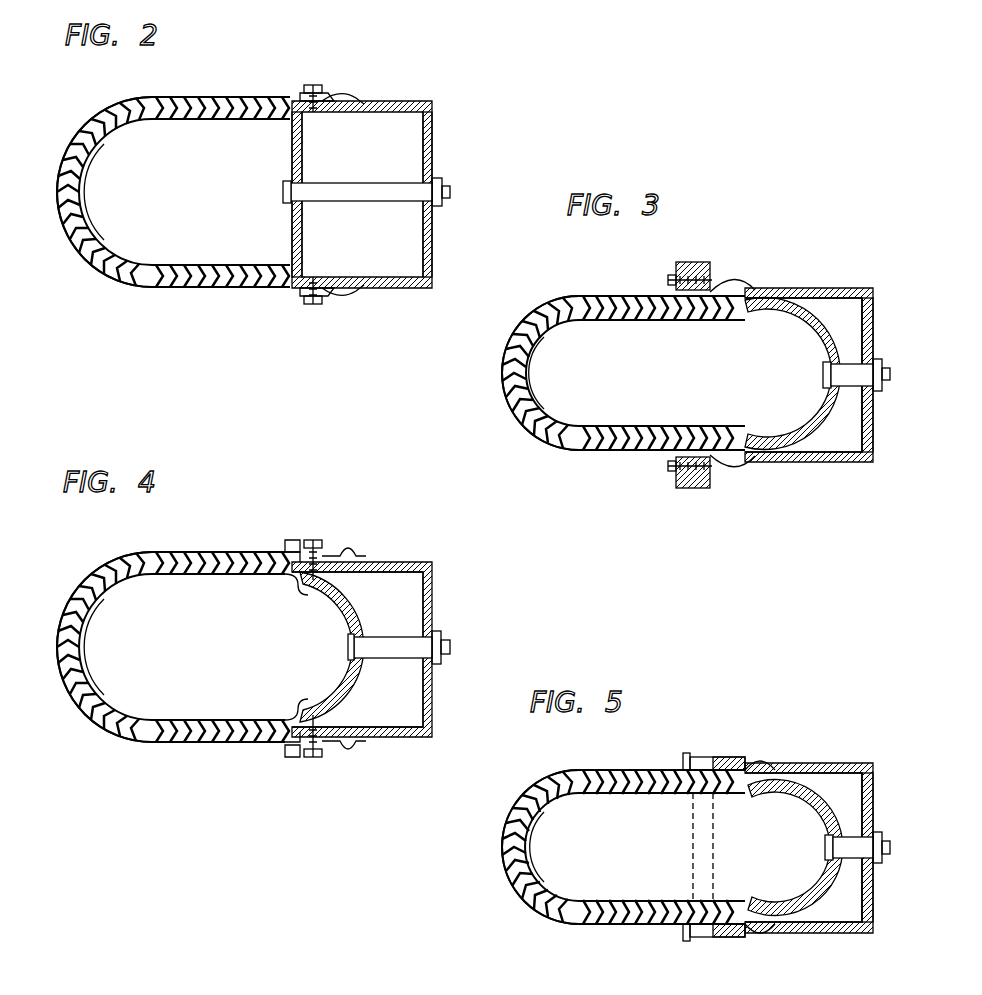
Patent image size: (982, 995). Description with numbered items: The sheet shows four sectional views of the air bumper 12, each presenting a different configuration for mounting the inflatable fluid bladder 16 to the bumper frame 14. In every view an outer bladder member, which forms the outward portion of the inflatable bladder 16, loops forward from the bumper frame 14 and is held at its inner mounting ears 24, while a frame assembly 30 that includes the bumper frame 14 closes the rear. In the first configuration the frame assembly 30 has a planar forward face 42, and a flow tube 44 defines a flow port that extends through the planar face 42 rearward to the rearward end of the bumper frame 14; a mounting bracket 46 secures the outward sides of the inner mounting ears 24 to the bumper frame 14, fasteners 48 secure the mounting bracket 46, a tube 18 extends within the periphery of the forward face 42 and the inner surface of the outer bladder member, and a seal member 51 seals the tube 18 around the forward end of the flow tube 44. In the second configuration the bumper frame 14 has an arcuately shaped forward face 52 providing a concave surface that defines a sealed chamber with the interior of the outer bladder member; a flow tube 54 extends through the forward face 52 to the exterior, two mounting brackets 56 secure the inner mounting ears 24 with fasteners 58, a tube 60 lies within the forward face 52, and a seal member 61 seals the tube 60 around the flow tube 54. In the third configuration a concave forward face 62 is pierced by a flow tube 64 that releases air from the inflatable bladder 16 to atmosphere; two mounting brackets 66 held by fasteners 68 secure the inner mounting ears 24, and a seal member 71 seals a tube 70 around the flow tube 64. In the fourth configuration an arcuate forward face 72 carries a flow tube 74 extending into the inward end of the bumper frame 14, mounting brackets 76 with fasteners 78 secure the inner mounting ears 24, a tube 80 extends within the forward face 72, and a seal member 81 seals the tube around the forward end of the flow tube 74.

In FIG. 2, the air bumper 12 is at (118, 92).
In FIG. 3, the air bumper 12 is at (500, 400).
In FIG. 4, the air bumper 12 is at (118, 548).
In FIG. 5, the air bumper 12 is at (500, 880).
In FIG. 2, the bumper frame 14 is at (438, 158).
In FIG. 3, the bumper frame 14 is at (877, 292).
In FIG. 4, the bumper frame 14 is at (440, 598).
In FIG. 5, the bumper frame 14 is at (878, 768).
In FIG. 2, the inflatable fluid bladder 16 is at (103, 265).
In FIG. 3, the inflatable fluid bladder 16 is at (532, 437).
In FIG. 4, the inflatable fluid bladder 16 is at (96, 710).
In FIG. 5, the inflatable fluid bladder 16 is at (532, 908).
In FIG. 2, the tube 18 is at (105, 242).
In FIG. 2, the inner mounting ear 24 is at (345, 98).
In FIG. 3, the inner mounting ear 24 is at (742, 300).
In FIG. 5, the inner mounting ear 24 is at (743, 770).
In FIG. 2, the frame assembly 30 is at (428, 230).
In FIG. 3, the frame assembly 30 is at (870, 452).
In FIG. 4, the frame assembly 30 is at (400, 565).
In FIG. 5, the frame assembly 30 is at (838, 895).
In FIG. 2, the planar forward face 42 is at (290, 133).
In FIG. 2, the flow tube 44 is at (345, 185).
In FIG. 2, the mounting bracket 46 is at (330, 92).
In FIG. 2, the fasteners 48 is at (310, 86).
In FIG. 2, the seal member 51 is at (283, 190).
In FIG. 3, the arcuately shaped forward face 52 is at (790, 318).
In FIG. 3, the flow tube 54 is at (856, 388).
In FIG. 3, the mounting brackets 56 is at (692, 262).
In FIG. 3, the fasteners 58 is at (670, 280).
In FIG. 3, the tube 60 is at (530, 400).
In FIG. 3, the seal member 61 is at (822, 372).
In FIG. 4, the arcuately shaped forward face 62 is at (320, 598).
In FIG. 4, the flow tube 64 is at (397, 652).
In FIG. 4, the mounting brackets 66 is at (338, 546).
In FIG. 4, the fasteners 68 is at (300, 540).
In FIG. 4, the tube 70 is at (90, 676).
In FIG. 4, the seal member 71 is at (348, 648).
In FIG. 5, the forward face 72 is at (810, 790).
In FIG. 5, the flow tube 74 is at (856, 840).
In FIG. 5, the mounting brackets 76 is at (722, 756).
In FIG. 5, the fasteners 78 is at (705, 755).
In FIG. 5, the tube 80 is at (528, 872).
In FIG. 5, the seal member 81 is at (825, 848).